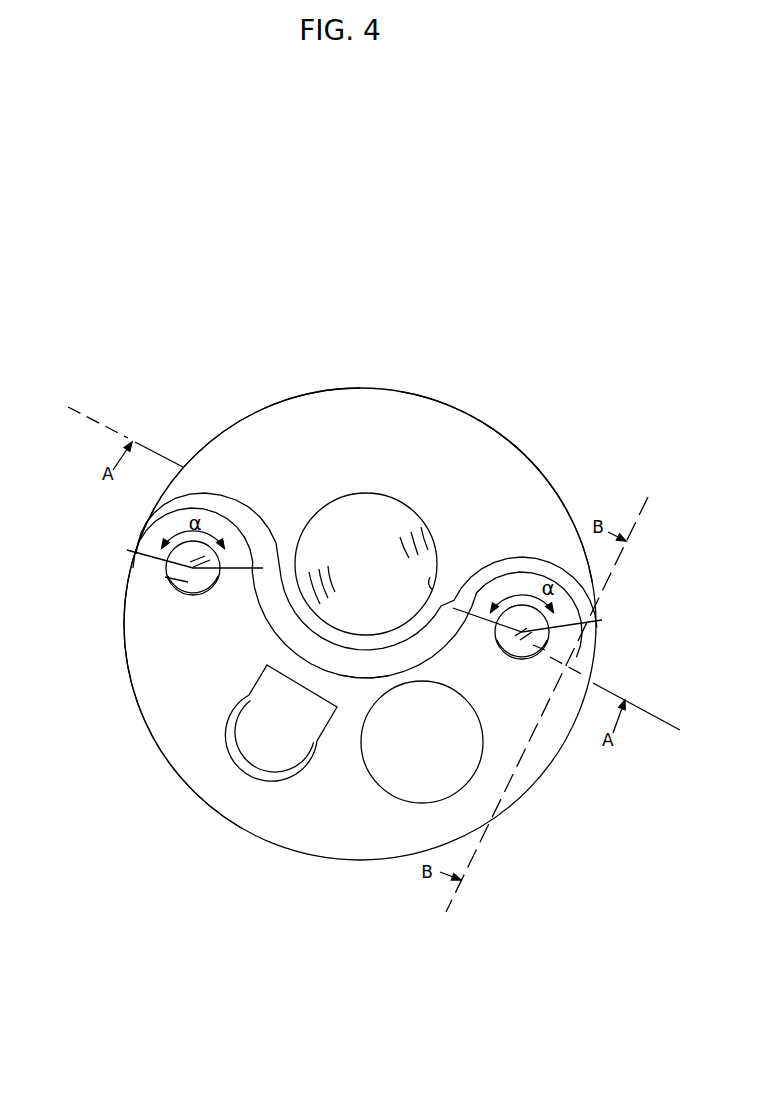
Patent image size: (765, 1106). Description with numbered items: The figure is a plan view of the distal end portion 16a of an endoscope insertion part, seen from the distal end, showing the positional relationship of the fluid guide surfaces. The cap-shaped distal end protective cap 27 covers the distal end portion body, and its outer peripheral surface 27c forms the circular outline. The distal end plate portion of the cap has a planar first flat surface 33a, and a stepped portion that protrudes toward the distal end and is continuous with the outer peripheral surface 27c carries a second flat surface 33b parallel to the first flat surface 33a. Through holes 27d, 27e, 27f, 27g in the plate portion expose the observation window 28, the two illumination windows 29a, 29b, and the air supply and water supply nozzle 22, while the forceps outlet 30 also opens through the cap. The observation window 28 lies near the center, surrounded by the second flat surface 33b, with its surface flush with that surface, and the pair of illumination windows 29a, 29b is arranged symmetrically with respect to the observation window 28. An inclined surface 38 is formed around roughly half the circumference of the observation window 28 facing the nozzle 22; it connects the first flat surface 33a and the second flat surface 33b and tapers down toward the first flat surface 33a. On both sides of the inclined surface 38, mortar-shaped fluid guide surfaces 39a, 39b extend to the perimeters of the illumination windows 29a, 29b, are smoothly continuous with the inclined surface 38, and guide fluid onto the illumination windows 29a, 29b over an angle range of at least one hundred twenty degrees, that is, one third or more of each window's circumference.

The distal end portion 16a is at (538, 337).
The air supply and water supply nozzle 22 is at (268, 713).
The distal end protective cap 27 is at (270, 841).
The outer peripheral surface 27c is at (440, 402).
The through hole 27d is at (437, 577).
The through hole 27e is at (193, 595).
The through hole 27f is at (500, 648).
The through hole 27g is at (266, 776).
The observation window 28 is at (375, 537).
The illumination window 29a is at (185, 581).
The illumination window 29b is at (519, 605).
The forceps outlet 30 is at (410, 777).
The first flat surface 33a is at (197, 728).
The second flat surface 33b is at (307, 427).
The inclined surface 38 is at (365, 663).
The fluid guide surface 39a is at (233, 517).
The fluid guide surface 39b is at (485, 573).